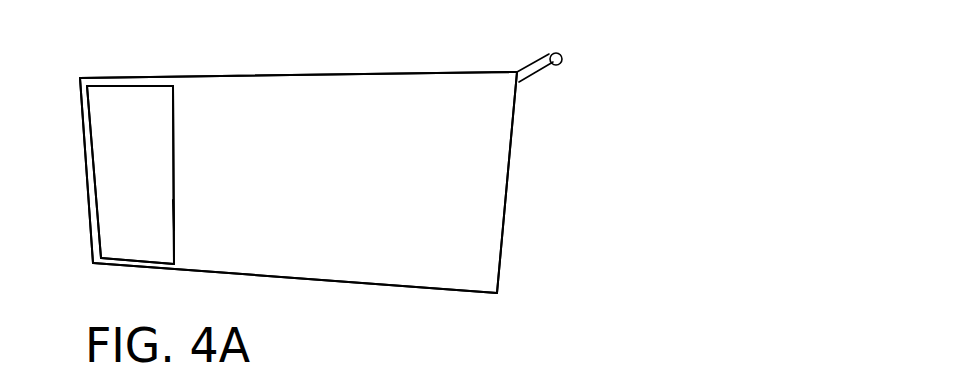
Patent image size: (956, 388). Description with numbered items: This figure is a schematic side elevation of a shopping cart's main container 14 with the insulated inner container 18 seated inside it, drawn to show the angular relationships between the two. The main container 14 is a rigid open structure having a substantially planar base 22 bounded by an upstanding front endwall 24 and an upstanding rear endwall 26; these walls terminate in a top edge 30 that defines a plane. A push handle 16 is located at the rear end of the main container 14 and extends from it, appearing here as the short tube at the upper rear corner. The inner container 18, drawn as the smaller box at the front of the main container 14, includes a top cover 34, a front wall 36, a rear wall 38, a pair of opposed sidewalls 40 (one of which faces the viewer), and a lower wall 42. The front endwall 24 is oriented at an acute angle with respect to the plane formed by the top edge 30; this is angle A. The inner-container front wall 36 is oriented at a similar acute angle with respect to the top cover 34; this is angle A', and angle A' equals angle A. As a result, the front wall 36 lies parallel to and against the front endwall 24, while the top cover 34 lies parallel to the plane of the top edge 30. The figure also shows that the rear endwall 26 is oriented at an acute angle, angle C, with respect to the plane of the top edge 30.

The main container 14 is at (485, 235).
The push handle 16 is at (563, 48).
The insulated inner container 18 is at (152, 182).
The base 22 is at (367, 280).
The front endwall 24 is at (88, 232).
The rear endwall 26 is at (512, 170).
The top edge 30 is at (308, 75).
The top cover 34 is at (150, 80).
The front wall 36 is at (92, 190).
The rear wall 38 is at (178, 128).
The sidewalls 40 is at (163, 203).
The lower wall 42 is at (153, 262).
The angle A is at (132, 122).
The angle A' is at (114, 104).
The angle C is at (458, 77).